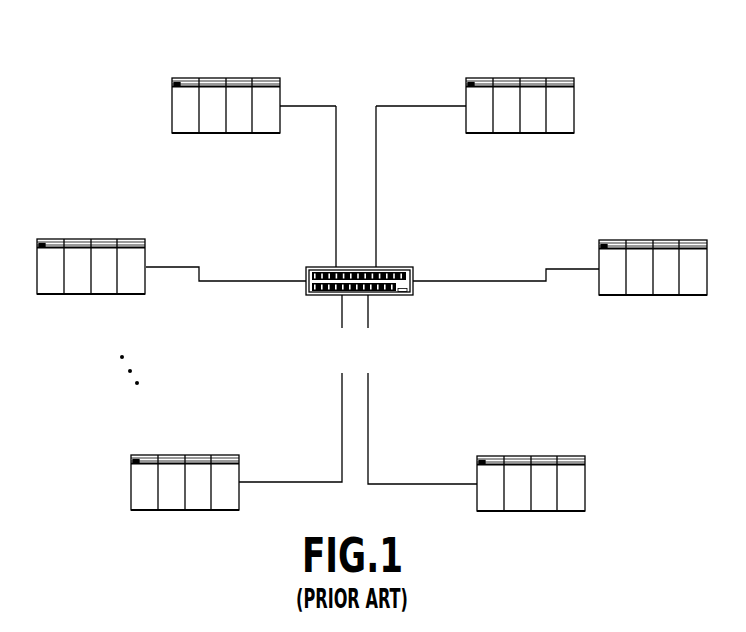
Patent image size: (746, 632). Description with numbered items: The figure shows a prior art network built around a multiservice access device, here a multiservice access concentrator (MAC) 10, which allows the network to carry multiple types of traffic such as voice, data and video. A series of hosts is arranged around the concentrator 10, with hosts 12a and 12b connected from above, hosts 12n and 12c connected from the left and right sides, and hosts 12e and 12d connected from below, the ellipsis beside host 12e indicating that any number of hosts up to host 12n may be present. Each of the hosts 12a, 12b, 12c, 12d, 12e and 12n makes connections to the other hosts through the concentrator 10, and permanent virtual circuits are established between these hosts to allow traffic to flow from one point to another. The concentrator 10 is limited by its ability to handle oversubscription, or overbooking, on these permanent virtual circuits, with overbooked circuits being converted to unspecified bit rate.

The multiservice access concentrator 10 is at (404, 266).
The host 12a is at (195, 78).
The host 12b is at (481, 78).
The host 12c is at (614, 240).
The host 12d is at (495, 455).
The host 12e is at (146, 455).
The host 12n is at (57, 239).